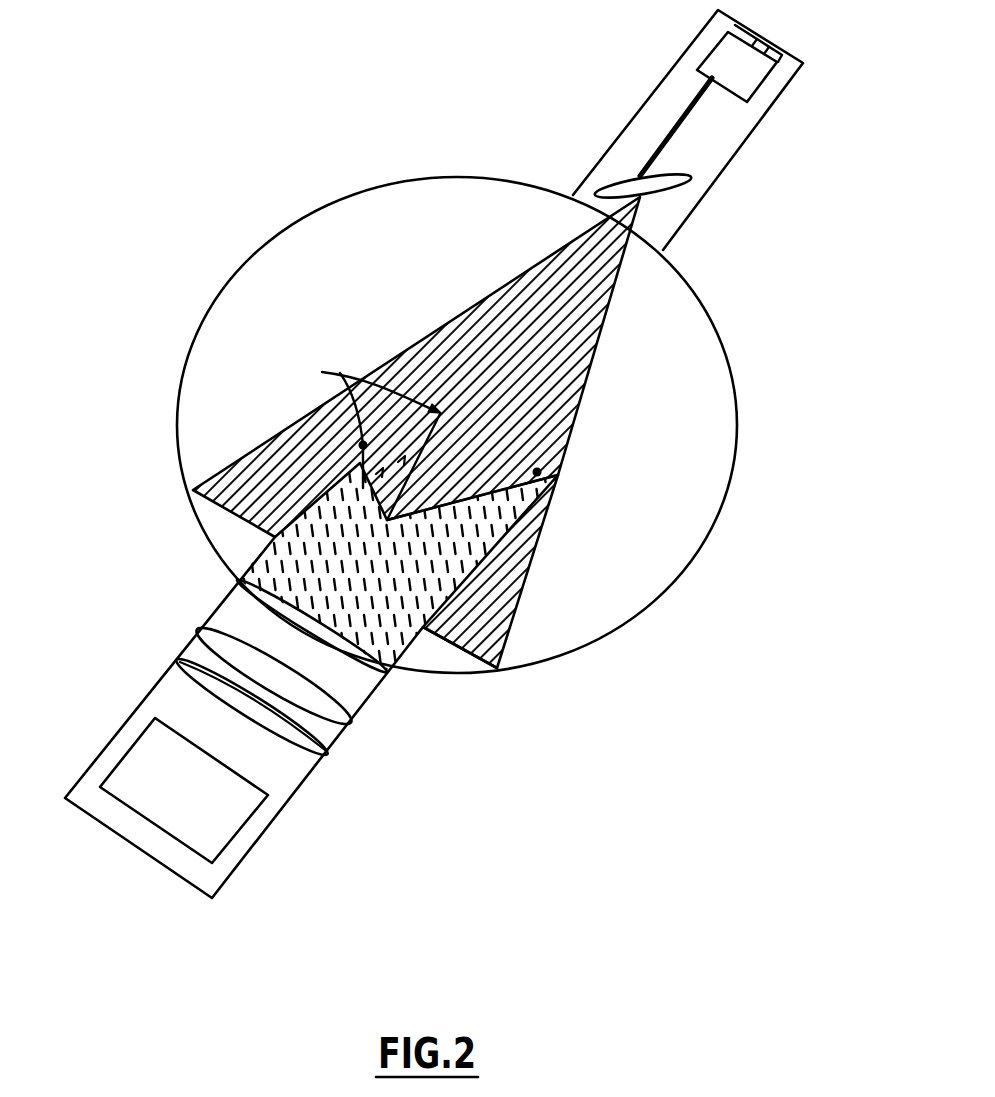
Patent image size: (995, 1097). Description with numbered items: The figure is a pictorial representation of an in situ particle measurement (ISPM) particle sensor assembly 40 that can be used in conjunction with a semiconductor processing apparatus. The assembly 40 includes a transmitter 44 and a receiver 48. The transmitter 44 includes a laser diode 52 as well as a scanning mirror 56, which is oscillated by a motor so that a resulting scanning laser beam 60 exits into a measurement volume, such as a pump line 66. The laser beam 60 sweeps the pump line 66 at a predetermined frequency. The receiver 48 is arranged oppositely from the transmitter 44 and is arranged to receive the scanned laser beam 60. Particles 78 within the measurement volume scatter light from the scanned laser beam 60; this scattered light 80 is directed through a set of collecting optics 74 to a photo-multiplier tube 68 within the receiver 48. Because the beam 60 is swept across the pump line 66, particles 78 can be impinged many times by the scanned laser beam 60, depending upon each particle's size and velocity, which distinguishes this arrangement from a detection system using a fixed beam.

The ISPM particle sensor assembly 40 is at (200, 176).
The transmitter 44 is at (661, 82).
The receiver 48 is at (140, 704).
The laser diode 52 is at (770, 92).
The scanning mirror 56 is at (687, 178).
The scanning laser beam 60 is at (601, 340).
The pump line 66 is at (732, 480).
The photo-multiplier tube 68 is at (250, 824).
The set of collecting optics 74 is at (345, 732).
The particles 78 is at (618, 522).
The scattered light 80 is at (275, 538).